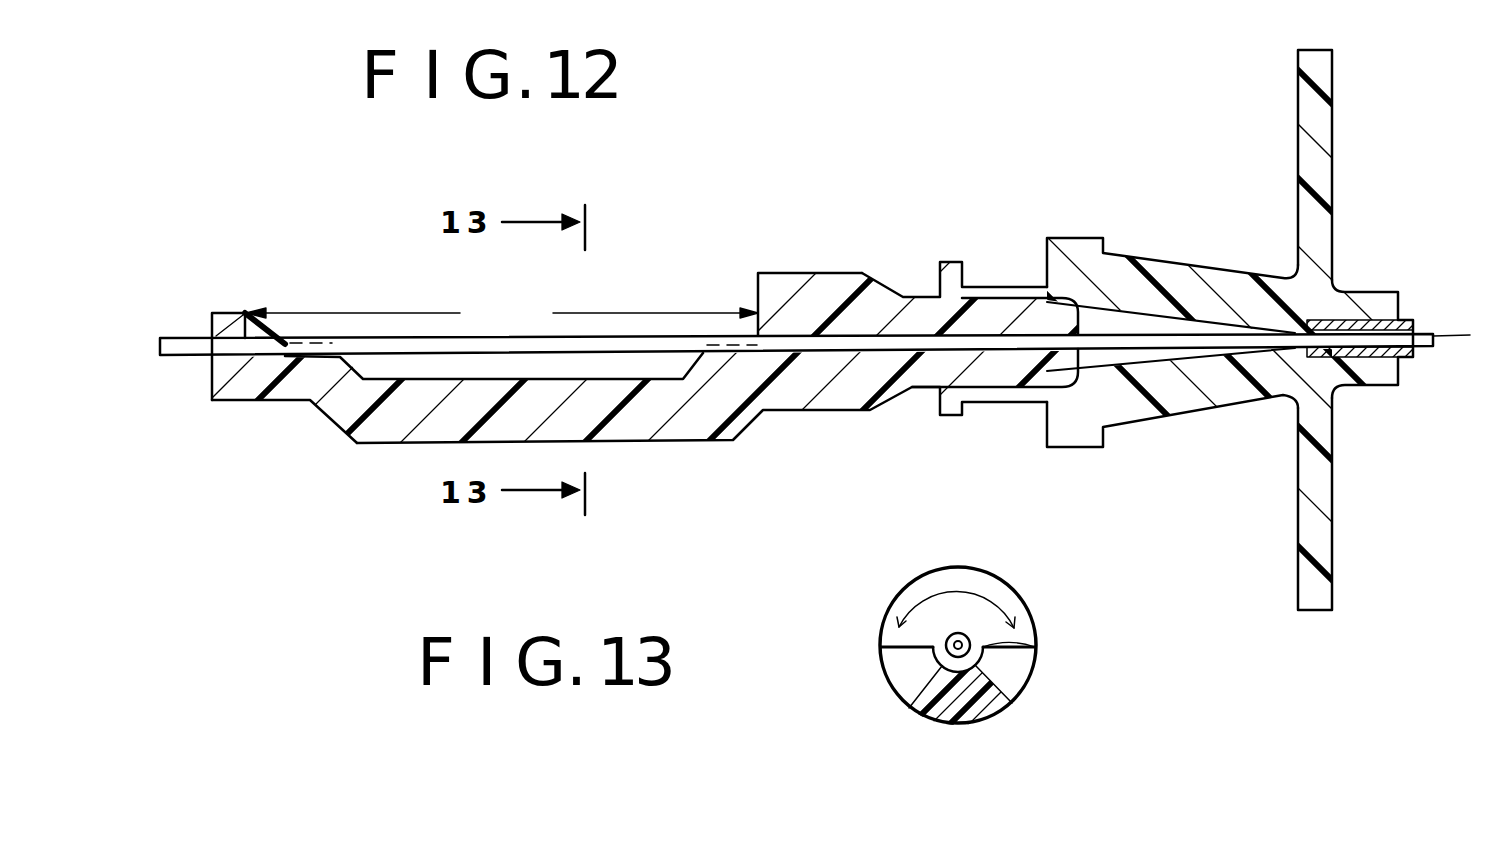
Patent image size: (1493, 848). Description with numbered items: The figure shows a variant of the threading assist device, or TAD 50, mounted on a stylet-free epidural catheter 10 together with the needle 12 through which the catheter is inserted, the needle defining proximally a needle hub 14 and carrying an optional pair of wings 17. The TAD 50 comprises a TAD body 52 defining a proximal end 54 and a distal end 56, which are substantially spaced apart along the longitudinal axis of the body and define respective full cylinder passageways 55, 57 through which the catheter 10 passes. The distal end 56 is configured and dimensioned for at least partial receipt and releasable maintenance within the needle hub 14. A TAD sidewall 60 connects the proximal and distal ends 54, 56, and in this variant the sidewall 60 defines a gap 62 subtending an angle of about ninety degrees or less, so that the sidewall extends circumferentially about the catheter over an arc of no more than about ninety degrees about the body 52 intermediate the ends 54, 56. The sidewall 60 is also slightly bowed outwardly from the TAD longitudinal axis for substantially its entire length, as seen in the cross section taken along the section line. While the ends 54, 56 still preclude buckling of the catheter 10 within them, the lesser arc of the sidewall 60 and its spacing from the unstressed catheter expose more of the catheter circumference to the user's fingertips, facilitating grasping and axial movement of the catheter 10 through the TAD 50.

In FIG. 12, the stylet-free epidural catheter 10 is at (187, 368).
In FIG. 13, the stylet-free epidural catheter 10 is at (976, 636).
In FIG. 12, the needle 12 is at (1418, 320).
In FIG. 12, the needle hub 14 is at (1070, 237).
In FIG. 12, the wings 17 is at (1298, 150).
In FIG. 12, the TAD 50 is at (781, 171).
In FIG. 13, the TAD 50 is at (913, 720).
In FIG. 12, the TAD body 52 is at (612, 333).
In FIG. 12, the proximal end 54 is at (218, 313).
In FIG. 12, the full cylinder passageway 55 is at (247, 342).
In FIG. 12, the distal end 56 is at (878, 278).
In FIG. 12, the full cylinder passageway 57 is at (872, 330).
In FIG. 12, the TAD sidewall 60 is at (762, 411).
In FIG. 13, the TAD sidewall 60 is at (1008, 718).
In FIG. 12, the gap 62 is at (502, 318).
In FIG. 13, the gap 62 is at (980, 593).